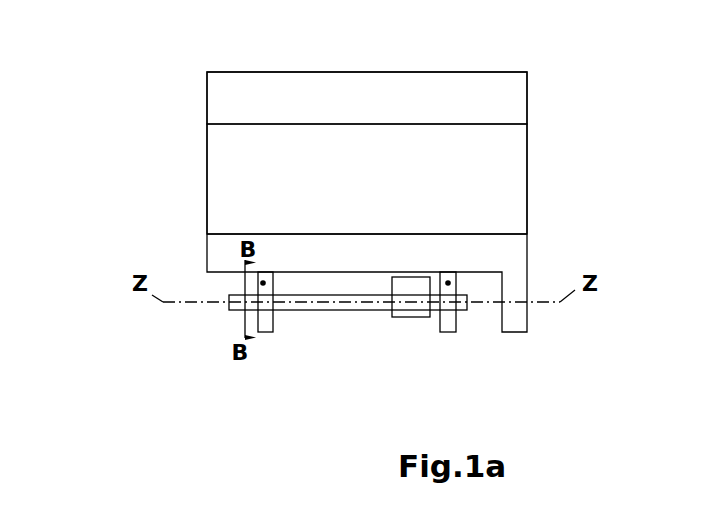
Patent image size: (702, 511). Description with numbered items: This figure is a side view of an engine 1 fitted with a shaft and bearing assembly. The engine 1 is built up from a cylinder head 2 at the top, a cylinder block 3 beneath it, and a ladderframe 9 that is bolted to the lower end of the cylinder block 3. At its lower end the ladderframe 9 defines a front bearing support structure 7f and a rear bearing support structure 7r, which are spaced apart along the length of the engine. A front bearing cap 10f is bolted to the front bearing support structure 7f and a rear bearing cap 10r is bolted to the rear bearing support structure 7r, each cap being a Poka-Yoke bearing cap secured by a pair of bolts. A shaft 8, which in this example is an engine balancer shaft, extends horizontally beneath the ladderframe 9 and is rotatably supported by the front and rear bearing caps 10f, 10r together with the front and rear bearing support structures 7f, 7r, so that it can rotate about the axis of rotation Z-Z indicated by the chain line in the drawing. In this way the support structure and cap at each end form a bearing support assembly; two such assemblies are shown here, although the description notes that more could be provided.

The engine 1 is at (206, 72).
The cylinder head 2 is at (315, 72).
The cylinder block 3 is at (207, 182).
The ladderframe 9 is at (207, 262).
The front bearing support structure 7f is at (264, 281).
The rear bearing support structure 7r is at (447, 281).
The shaft 8 is at (368, 311).
The front bearing cap 10f is at (265, 333).
The rear bearing cap 10r is at (448, 333).